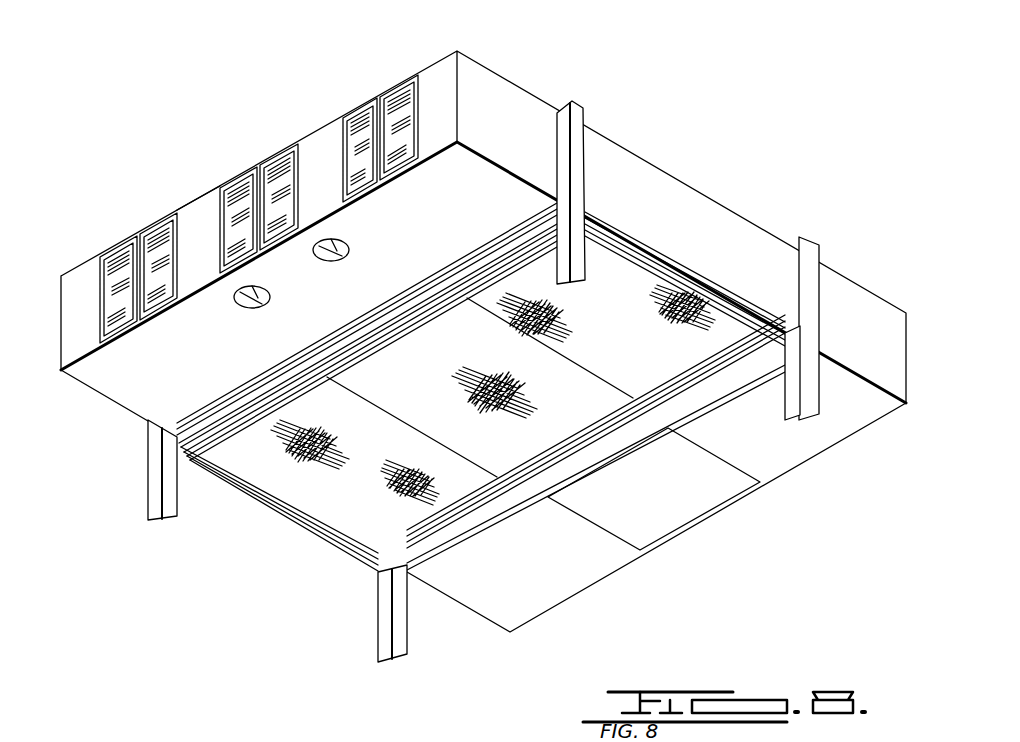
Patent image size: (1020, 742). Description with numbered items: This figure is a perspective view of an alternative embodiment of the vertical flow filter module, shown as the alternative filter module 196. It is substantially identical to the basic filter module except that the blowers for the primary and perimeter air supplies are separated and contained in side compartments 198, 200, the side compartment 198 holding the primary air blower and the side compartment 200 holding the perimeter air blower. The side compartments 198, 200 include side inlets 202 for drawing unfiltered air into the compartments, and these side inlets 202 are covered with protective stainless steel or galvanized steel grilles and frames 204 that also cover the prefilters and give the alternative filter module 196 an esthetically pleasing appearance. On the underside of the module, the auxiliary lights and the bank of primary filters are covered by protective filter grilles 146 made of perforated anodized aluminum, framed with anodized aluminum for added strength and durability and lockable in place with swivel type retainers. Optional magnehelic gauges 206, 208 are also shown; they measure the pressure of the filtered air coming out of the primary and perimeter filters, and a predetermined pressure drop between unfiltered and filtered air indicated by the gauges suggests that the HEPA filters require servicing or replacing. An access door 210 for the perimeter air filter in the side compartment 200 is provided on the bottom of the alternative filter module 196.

The protective filter grille 146 is at (458, 368).
The alternative filter module 196 is at (266, 555).
The side compartment 198 is at (512, 116).
The side compartment 200 is at (334, 143).
The side inlet 202 is at (205, 226).
The grilles and frames 204 is at (116, 255).
The magnehelic gauge 206 is at (250, 308).
The magnehelic gauge 208 is at (331, 261).
The access door 210 is at (731, 486).